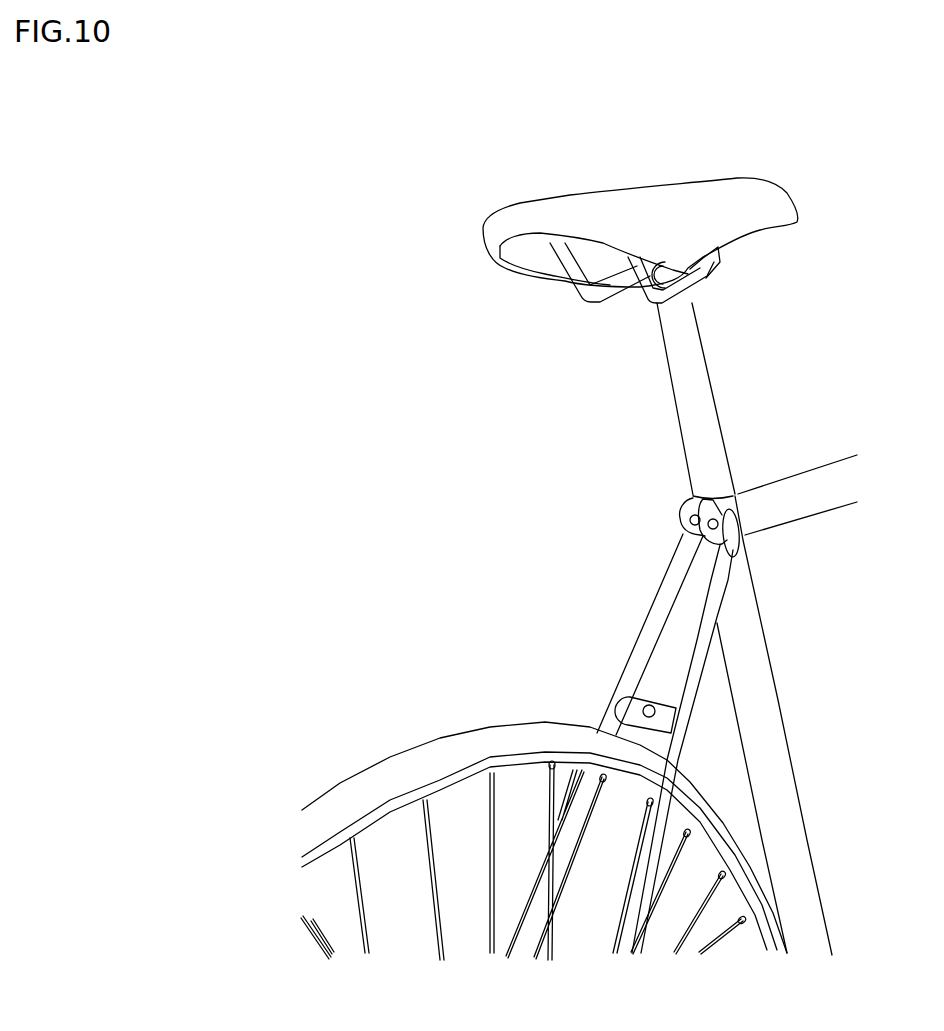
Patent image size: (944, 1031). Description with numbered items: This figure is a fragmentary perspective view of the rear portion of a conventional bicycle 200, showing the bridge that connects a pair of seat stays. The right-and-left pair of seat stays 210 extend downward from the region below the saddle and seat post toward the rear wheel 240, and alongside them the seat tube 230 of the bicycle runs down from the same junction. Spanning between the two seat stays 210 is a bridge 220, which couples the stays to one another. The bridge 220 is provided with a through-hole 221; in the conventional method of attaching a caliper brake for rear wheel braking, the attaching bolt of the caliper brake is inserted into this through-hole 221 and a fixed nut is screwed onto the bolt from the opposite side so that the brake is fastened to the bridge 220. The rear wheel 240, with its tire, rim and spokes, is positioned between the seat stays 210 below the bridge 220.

The bicycle 200 is at (300, 429).
The seat stays 210 is at (647, 613).
The bridge 220 is at (643, 693).
The through-hole 221 is at (620, 722).
The seat tube 230 is at (783, 747).
The rear wheel 240 is at (362, 773).